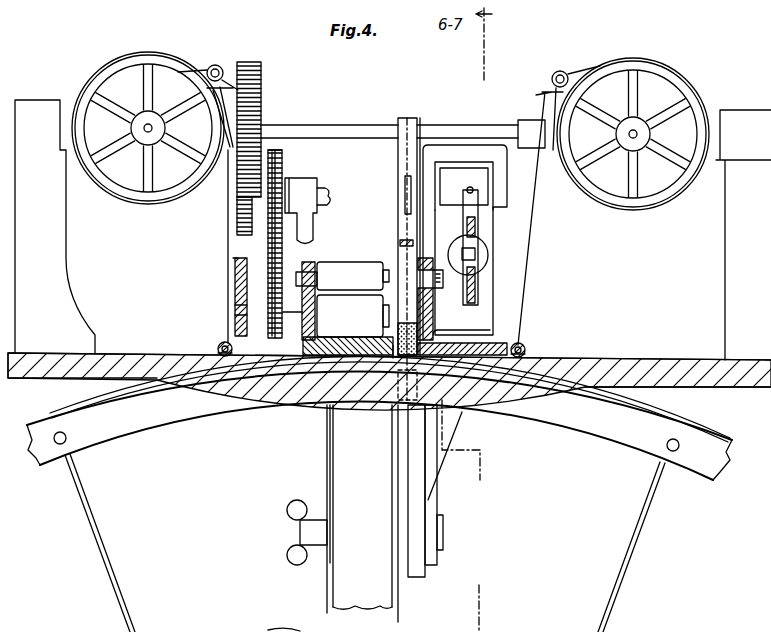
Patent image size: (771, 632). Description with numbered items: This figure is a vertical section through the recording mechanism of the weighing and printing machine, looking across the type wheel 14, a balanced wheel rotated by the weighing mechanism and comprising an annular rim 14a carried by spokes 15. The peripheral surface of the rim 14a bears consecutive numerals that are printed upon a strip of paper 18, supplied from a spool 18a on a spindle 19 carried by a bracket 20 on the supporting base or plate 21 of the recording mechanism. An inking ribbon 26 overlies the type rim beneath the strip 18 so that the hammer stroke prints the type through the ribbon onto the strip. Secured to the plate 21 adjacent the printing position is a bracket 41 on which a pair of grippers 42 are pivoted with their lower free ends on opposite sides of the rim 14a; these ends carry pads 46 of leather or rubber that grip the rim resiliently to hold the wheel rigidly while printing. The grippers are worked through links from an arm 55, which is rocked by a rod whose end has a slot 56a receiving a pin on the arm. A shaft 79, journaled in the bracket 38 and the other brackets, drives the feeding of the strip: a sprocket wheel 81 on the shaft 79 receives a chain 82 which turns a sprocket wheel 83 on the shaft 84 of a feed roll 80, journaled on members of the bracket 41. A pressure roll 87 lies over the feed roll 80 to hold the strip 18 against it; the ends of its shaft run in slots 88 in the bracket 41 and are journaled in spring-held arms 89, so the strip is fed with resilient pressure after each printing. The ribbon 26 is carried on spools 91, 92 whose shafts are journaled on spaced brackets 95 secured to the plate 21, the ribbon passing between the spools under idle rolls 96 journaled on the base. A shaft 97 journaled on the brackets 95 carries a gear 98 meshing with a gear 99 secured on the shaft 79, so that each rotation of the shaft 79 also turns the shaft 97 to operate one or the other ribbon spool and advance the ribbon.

The type wheel 14 is at (112, 437).
The annular rim 14a is at (72, 418).
The spokes 15 is at (128, 572).
The strip of paper 18 is at (362, 513).
The spool 18a is at (328, 452).
The spindle 19 is at (296, 540).
The bracket 20 is at (420, 510).
The supporting base or plate 21 is at (746, 388).
The inking ribbon 26 is at (536, 300).
The bracket 38 is at (325, 190).
The bracket 41 is at (428, 150).
The grippers 42 is at (403, 257).
The pads 46 is at (395, 357).
The arm 55 is at (485, 220).
The slot 56a is at (480, 271).
The shaft 79 is at (331, 186).
The feed roll 80 is at (336, 316).
The sprocket wheel 81 is at (280, 154).
The chain 82 is at (284, 170).
The sprocket wheel 83 is at (266, 350).
The shaft 84 is at (298, 352).
The pressure roll 87 is at (342, 278).
The slots 88 is at (303, 268).
The arms 89 is at (244, 262).
The ribbon spool 91 is at (143, 192).
The ribbon spool 92 is at (612, 192).
The brackets 95 is at (393, 230).
The idle rolls 96 is at (224, 344).
The shaft 97 is at (336, 132).
The gear 98 is at (249, 62).
The gear 99 is at (236, 226).